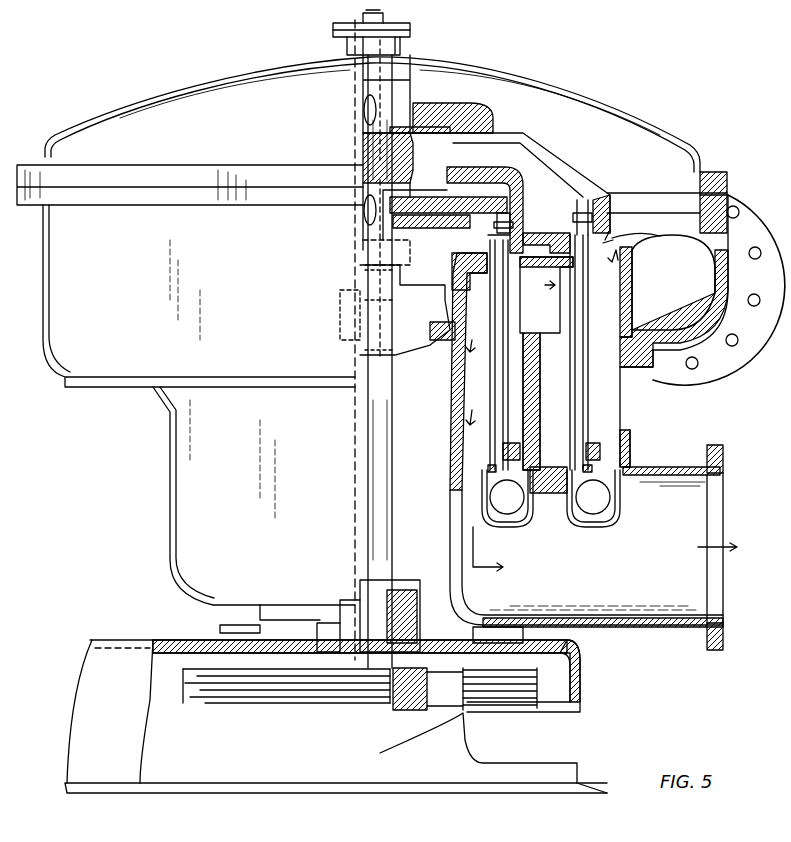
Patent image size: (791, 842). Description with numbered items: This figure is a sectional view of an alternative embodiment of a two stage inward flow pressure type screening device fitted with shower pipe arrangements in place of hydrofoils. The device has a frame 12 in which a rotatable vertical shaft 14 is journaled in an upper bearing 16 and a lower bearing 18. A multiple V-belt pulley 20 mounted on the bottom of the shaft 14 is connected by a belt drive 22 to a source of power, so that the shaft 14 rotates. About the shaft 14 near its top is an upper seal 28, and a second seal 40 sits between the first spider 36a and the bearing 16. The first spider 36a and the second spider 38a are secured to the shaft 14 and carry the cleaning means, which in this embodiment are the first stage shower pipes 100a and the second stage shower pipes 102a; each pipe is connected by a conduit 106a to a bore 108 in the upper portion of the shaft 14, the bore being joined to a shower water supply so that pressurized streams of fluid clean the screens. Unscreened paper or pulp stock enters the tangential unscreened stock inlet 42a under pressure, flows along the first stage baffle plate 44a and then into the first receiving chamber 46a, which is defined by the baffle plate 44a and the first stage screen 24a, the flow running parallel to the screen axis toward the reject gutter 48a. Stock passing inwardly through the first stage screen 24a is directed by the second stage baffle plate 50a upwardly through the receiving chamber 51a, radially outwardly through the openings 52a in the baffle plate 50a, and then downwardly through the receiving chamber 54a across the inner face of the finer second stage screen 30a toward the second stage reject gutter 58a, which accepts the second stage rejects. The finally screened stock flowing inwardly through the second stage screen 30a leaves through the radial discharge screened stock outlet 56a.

The frame 12 is at (570, 703).
The rotatable vertical shaft 14 is at (394, 361).
The bearing 16 is at (360, 311).
The bearing 18 is at (360, 590).
The multiple V-belt pulley 20 is at (427, 712).
The belt drive 22 is at (237, 708).
The first stage screen 24a is at (565, 375).
The upper seal 28 is at (380, 148).
The second stage screen 30a is at (535, 400).
The first spider 36a is at (470, 225).
The second spider 38a is at (570, 170).
The second seal 40 is at (395, 255).
The tangential unscreened stock inlet 42a is at (704, 273).
The first stage baffle plate 44a is at (628, 300).
The first receiving chamber 46a is at (626, 455).
The reject gutter 48a is at (598, 520).
The second stage baffle plate 50a is at (530, 425).
The receiving chamber 51a is at (565, 295).
The openings 52a is at (540, 245).
The receiving chamber 54a is at (490, 375).
The radial discharge screened stock outlet 56a is at (694, 593).
The second stage reject gutter 58a is at (512, 520).
The first stage shower pipes 100a is at (608, 205).
The second stage shower pipes 102a is at (455, 288).
The conduit 106a is at (585, 190).
The bore 108 is at (365, 110).